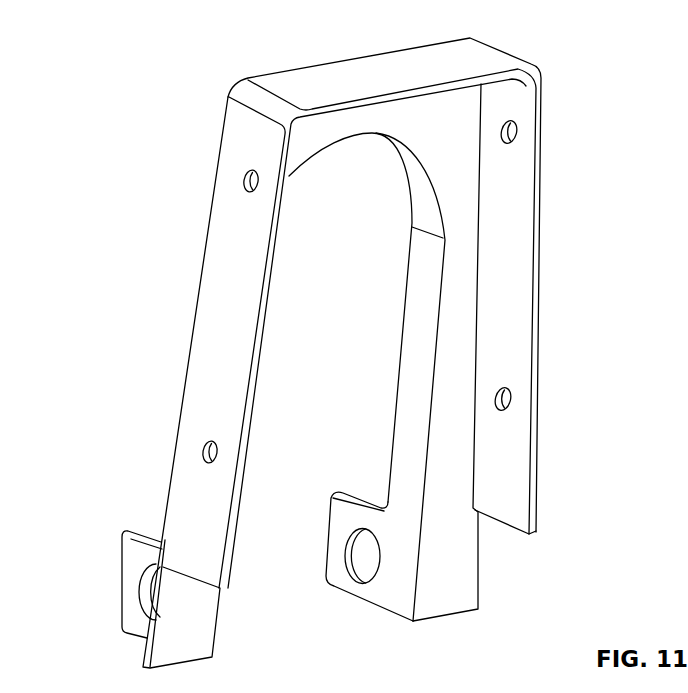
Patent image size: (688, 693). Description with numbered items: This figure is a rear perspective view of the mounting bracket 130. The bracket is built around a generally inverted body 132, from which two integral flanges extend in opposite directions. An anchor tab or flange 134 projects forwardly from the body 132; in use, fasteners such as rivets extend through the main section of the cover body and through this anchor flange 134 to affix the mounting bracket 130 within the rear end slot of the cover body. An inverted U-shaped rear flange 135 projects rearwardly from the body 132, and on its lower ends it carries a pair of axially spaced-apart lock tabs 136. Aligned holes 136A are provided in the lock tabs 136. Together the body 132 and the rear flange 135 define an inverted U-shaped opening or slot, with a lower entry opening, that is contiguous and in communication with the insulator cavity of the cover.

The mounting bracket 130 is at (127, 50).
The body 132 is at (444, 395).
The anchor tab or flange 134 is at (207, 330).
The inverted U-shaped rear flange 135 is at (415, 317).
The lock tabs 136 is at (343, 512).
The aligned holes 136A is at (348, 573).